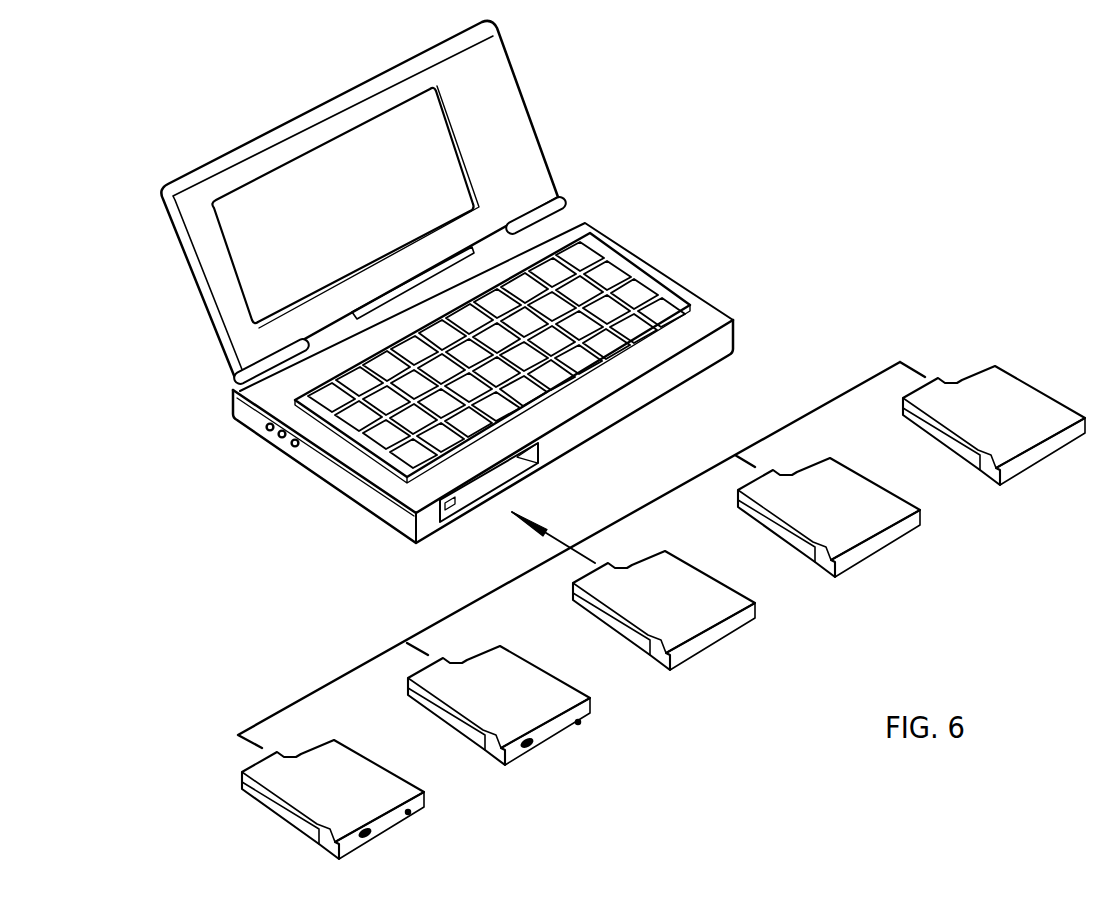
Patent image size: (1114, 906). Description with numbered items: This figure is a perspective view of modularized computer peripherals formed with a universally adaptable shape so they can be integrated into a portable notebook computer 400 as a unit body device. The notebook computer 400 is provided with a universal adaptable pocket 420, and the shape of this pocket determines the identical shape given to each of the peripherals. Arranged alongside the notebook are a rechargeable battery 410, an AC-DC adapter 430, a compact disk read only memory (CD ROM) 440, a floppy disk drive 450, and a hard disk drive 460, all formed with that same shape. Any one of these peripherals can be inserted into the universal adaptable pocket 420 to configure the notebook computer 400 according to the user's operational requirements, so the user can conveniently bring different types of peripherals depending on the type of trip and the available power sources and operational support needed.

The notebook computer 400 is at (447, 292).
The rechargeable battery 410 is at (303, 763).
The universal adaptable pocket 420 is at (485, 485).
The AC-DC adapter 430 is at (468, 675).
The compact disk read only memory (CD ROM) 440 is at (635, 582).
The floppy disk drive 450 is at (798, 483).
The hard disk drive 460 is at (932, 393).